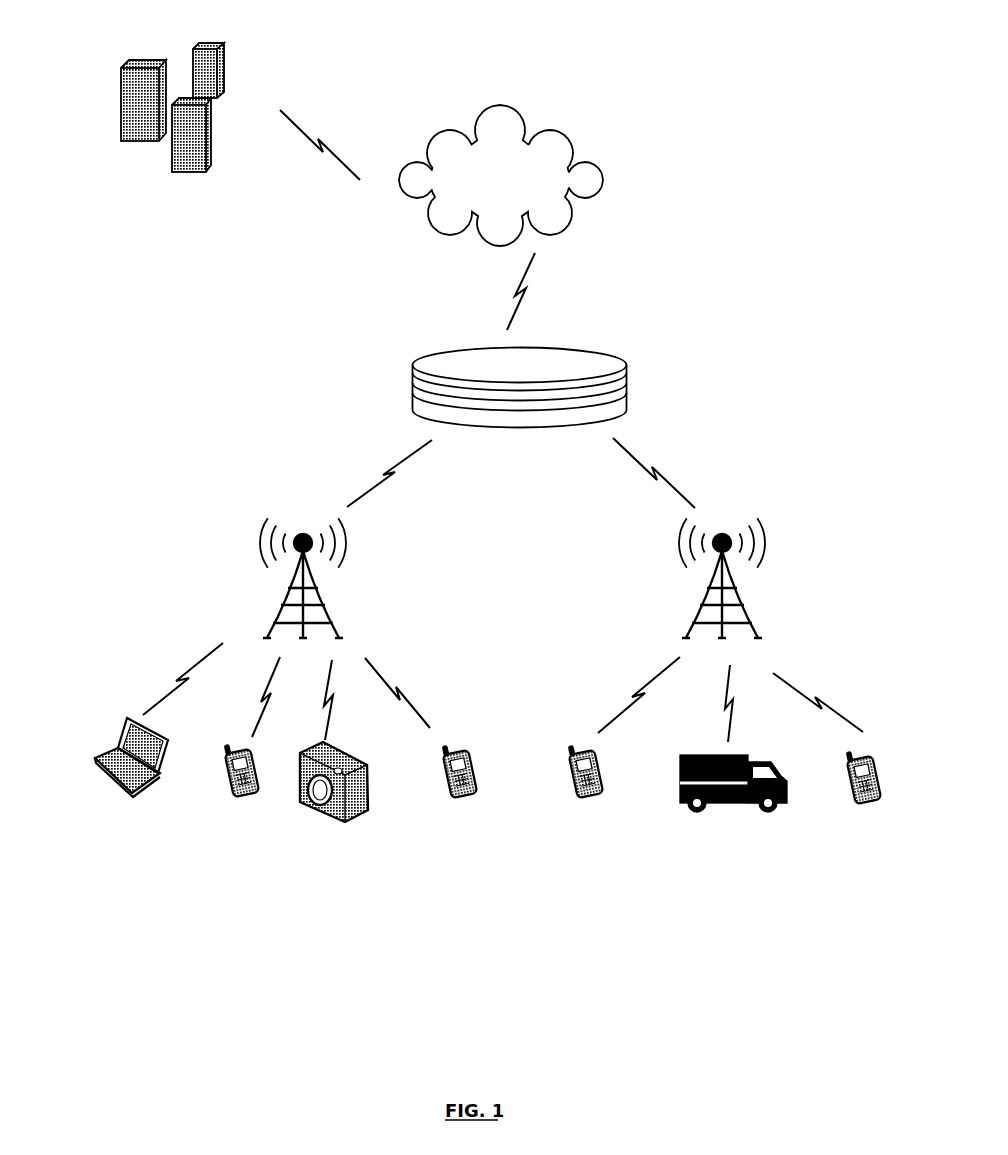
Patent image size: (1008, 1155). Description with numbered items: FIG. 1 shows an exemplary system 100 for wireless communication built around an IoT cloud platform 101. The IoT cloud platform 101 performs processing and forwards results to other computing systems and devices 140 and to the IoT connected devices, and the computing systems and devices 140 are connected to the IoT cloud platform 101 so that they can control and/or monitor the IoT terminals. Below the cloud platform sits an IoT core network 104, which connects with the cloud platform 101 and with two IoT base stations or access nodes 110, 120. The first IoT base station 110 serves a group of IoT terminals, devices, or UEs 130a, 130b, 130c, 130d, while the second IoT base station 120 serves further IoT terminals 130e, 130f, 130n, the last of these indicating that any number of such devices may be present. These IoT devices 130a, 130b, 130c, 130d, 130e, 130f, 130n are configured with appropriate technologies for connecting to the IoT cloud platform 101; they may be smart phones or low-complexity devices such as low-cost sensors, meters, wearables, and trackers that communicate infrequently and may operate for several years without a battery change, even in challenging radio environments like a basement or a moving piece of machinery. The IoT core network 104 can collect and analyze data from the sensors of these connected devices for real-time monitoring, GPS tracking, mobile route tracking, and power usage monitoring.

The system 100 is at (625, 155).
The IoT cloud platform 101 is at (518, 189).
The core network 104 is at (623, 373).
The IoT base station 110 is at (282, 610).
The IoT base station 120 is at (747, 612).
The computing systems and devices 140 is at (223, 48).
The IoT terminal 130a is at (120, 787).
The IoT terminal 130b is at (243, 795).
The IoT terminal 130c is at (352, 822).
The IoT terminal 130d is at (460, 800).
The IoT terminal 130e is at (590, 800).
The IoT terminal 130f is at (752, 800).
The IoT terminal 130n is at (863, 807).